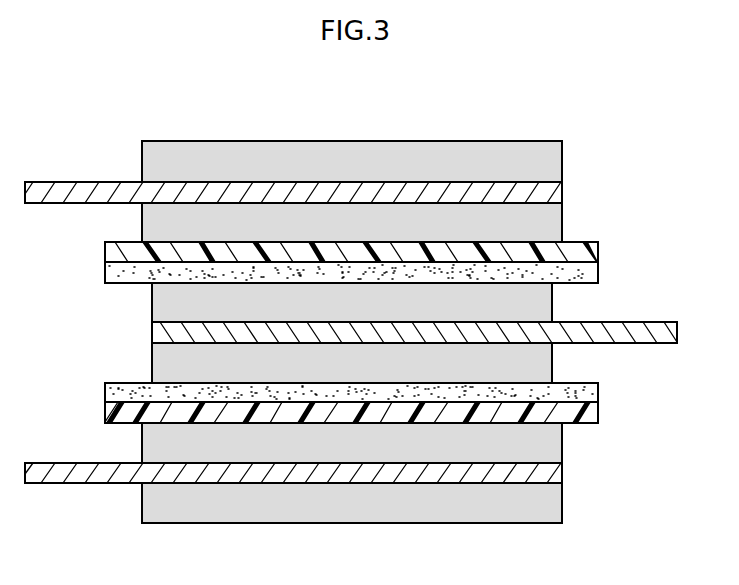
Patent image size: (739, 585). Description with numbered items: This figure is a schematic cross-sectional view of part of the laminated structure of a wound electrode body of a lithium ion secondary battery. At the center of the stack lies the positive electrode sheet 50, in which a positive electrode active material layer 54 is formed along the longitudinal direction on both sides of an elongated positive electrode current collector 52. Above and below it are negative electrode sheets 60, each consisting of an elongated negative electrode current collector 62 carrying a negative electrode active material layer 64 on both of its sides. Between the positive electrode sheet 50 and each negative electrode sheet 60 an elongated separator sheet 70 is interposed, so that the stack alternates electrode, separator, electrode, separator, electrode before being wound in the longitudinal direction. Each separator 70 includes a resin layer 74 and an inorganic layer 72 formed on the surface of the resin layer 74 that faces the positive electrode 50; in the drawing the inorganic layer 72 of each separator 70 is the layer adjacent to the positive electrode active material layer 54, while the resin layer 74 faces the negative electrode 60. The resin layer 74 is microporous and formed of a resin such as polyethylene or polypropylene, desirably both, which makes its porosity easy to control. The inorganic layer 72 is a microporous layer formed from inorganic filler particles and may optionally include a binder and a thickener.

The positive electrode sheet 50 is at (354, 333).
The positive electrode current collector 52 is at (152, 330).
The positive electrode active material layer 54 is at (152, 307).
The negative electrode sheet 60 is at (353, 329).
The negative electrode current collector 62 is at (563, 188).
The negative electrode active material layer 64 is at (563, 158).
The separator sheet 70 is at (413, 330).
The inorganic layer 72 is at (598, 273).
The resin layer 74 is at (598, 252).